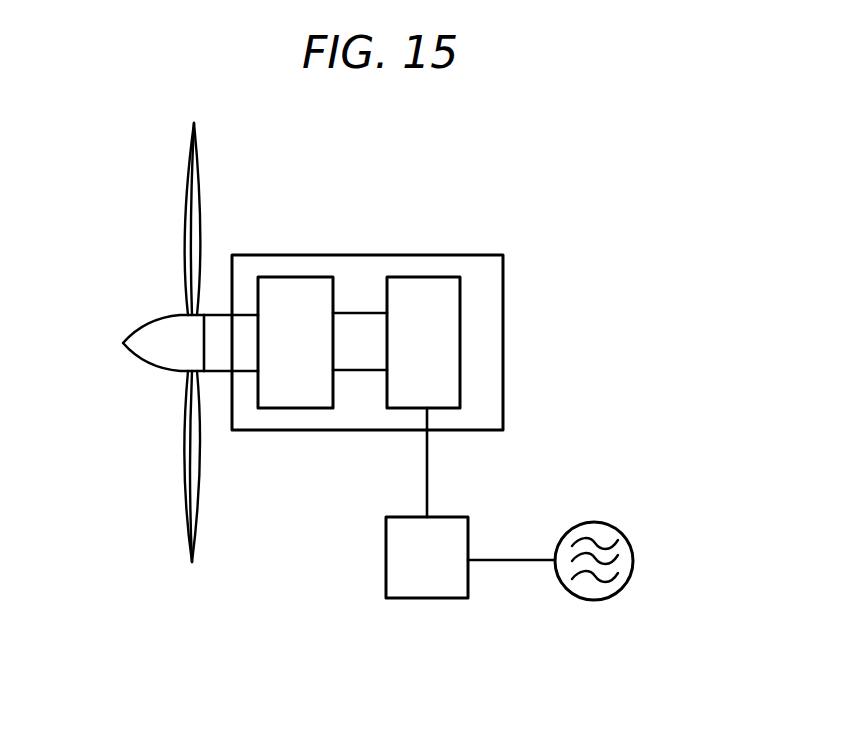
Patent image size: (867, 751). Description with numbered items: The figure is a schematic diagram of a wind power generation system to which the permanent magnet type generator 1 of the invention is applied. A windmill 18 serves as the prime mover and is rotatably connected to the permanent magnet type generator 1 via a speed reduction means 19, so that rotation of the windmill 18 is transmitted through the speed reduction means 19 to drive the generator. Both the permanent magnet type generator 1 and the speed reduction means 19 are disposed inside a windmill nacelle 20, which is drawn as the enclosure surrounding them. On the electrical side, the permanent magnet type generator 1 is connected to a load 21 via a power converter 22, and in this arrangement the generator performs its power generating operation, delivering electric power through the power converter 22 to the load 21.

The windmill 18 is at (187, 197).
The speed reduction means 19 is at (300, 276).
The permanent magnet type generator 1 is at (436, 276).
The windmill nacelle 20 is at (503, 330).
The power converter 22 is at (396, 573).
The load 21 is at (628, 557).